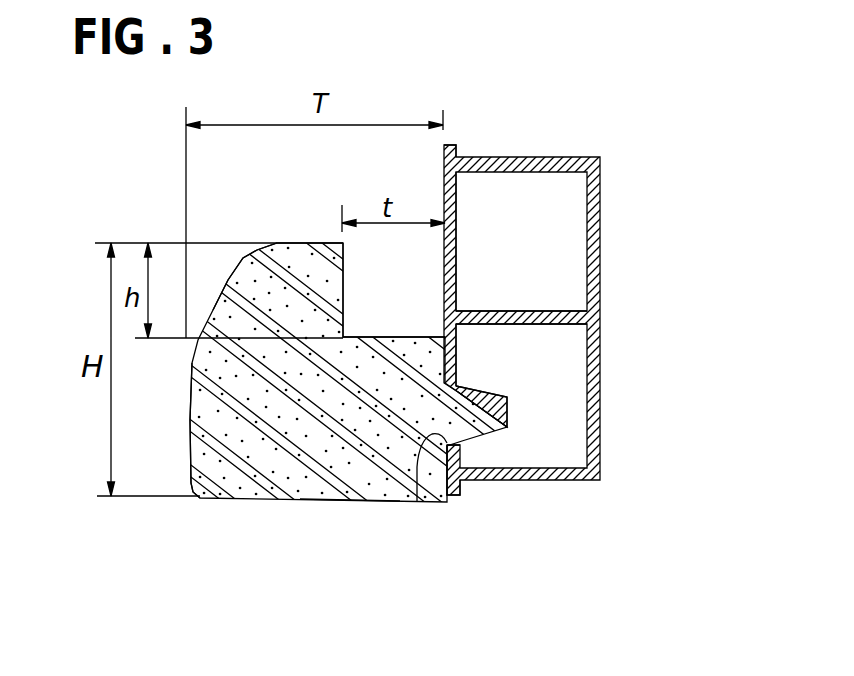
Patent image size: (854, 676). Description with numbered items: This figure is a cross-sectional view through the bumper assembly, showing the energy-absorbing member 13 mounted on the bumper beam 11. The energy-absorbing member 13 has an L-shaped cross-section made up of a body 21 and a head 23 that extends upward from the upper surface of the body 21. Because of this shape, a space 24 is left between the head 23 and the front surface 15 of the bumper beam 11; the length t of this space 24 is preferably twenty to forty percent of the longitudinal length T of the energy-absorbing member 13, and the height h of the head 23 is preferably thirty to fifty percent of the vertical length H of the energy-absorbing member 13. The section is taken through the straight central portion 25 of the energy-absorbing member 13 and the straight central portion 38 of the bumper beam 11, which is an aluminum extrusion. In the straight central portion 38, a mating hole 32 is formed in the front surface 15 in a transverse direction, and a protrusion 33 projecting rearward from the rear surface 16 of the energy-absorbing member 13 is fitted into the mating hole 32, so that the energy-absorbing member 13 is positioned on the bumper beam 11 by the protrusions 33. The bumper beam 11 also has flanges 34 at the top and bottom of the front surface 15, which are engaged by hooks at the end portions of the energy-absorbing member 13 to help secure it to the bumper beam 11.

The bumper beam 11 is at (552, 163).
The energy-absorbing member 13 is at (348, 503).
The front surface of the bumper beam 15 is at (443, 175).
The rear surface of the energy-absorbing member 16 is at (460, 363).
The body 21 is at (302, 412).
The head 23 is at (270, 282).
The space 24 is at (393, 282).
The straight central portion of the energy-absorbing member 25 is at (215, 457).
The mating hole 32 is at (417, 500).
The protrusion 33 is at (492, 426).
The flange 34 is at (450, 495).
The straight central portion of the bumper beam 38 is at (600, 313).